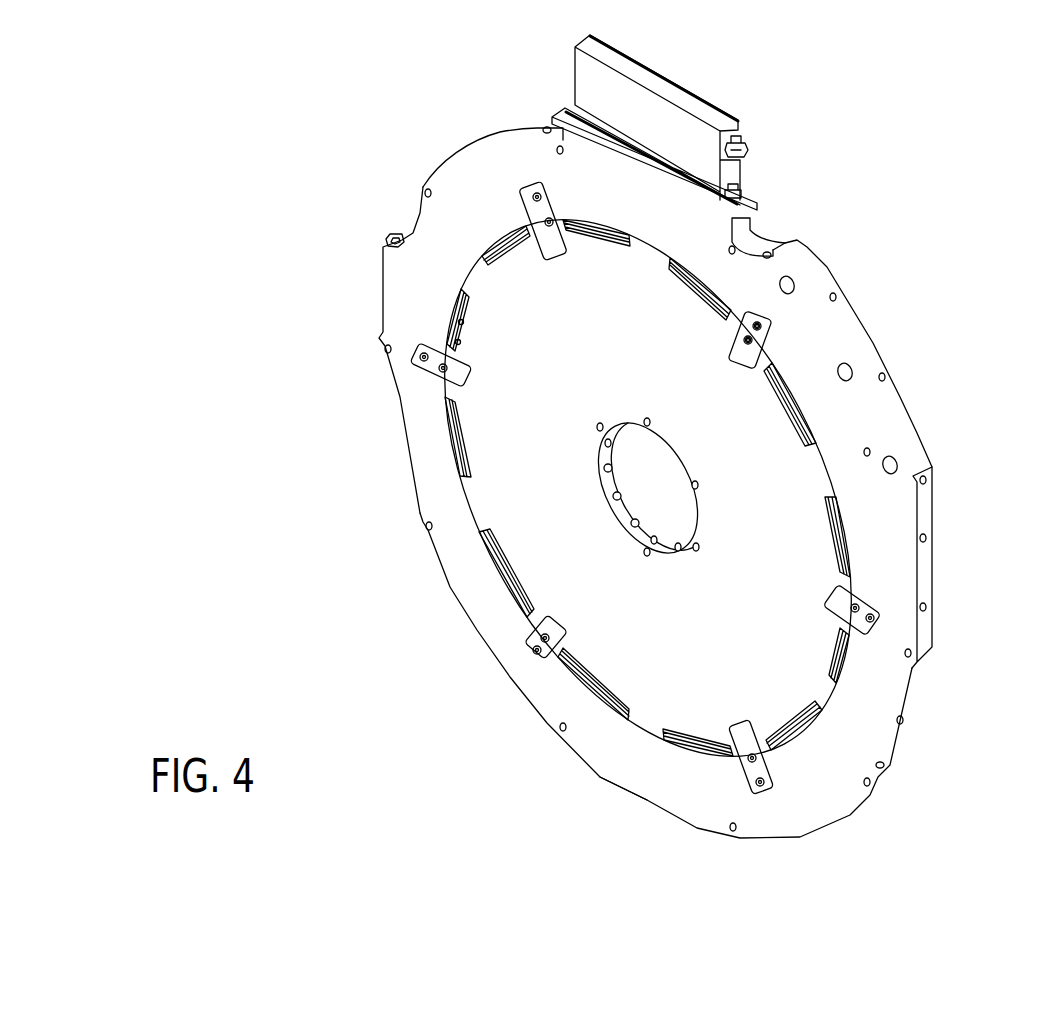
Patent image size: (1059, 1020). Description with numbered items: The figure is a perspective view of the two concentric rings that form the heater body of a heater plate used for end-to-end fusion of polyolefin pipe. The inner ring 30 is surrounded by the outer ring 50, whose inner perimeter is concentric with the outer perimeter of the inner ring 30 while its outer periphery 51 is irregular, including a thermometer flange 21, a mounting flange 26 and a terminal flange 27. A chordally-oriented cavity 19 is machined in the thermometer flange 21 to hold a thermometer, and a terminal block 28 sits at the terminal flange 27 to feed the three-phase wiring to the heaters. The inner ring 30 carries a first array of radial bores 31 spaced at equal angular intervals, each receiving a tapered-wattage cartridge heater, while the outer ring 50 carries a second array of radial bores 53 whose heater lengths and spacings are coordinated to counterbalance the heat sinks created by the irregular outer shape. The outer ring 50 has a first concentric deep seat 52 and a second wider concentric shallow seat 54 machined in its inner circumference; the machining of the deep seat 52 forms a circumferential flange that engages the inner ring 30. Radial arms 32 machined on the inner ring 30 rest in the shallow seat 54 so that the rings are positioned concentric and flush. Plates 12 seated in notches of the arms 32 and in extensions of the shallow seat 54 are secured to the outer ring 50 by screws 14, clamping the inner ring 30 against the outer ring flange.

The plate 12 is at (742, 355).
The screw 14 is at (760, 327).
The thermometer cavity 19 is at (392, 234).
The thermometer flange 21 is at (394, 297).
The mounting flange 26 is at (835, 340).
The terminal flange 27 is at (742, 236).
The terminal block 28 is at (672, 92).
The inner ring 30 is at (490, 483).
The inner ring radial bore 31 is at (634, 522).
The radial arm 32 is at (808, 470).
The outer ring 50 is at (468, 555).
The outer periphery 51 is at (907, 428).
The deep seat 52 is at (505, 245).
The outer ring radial bore 53 is at (540, 128).
The shallow seat 54 is at (447, 418).